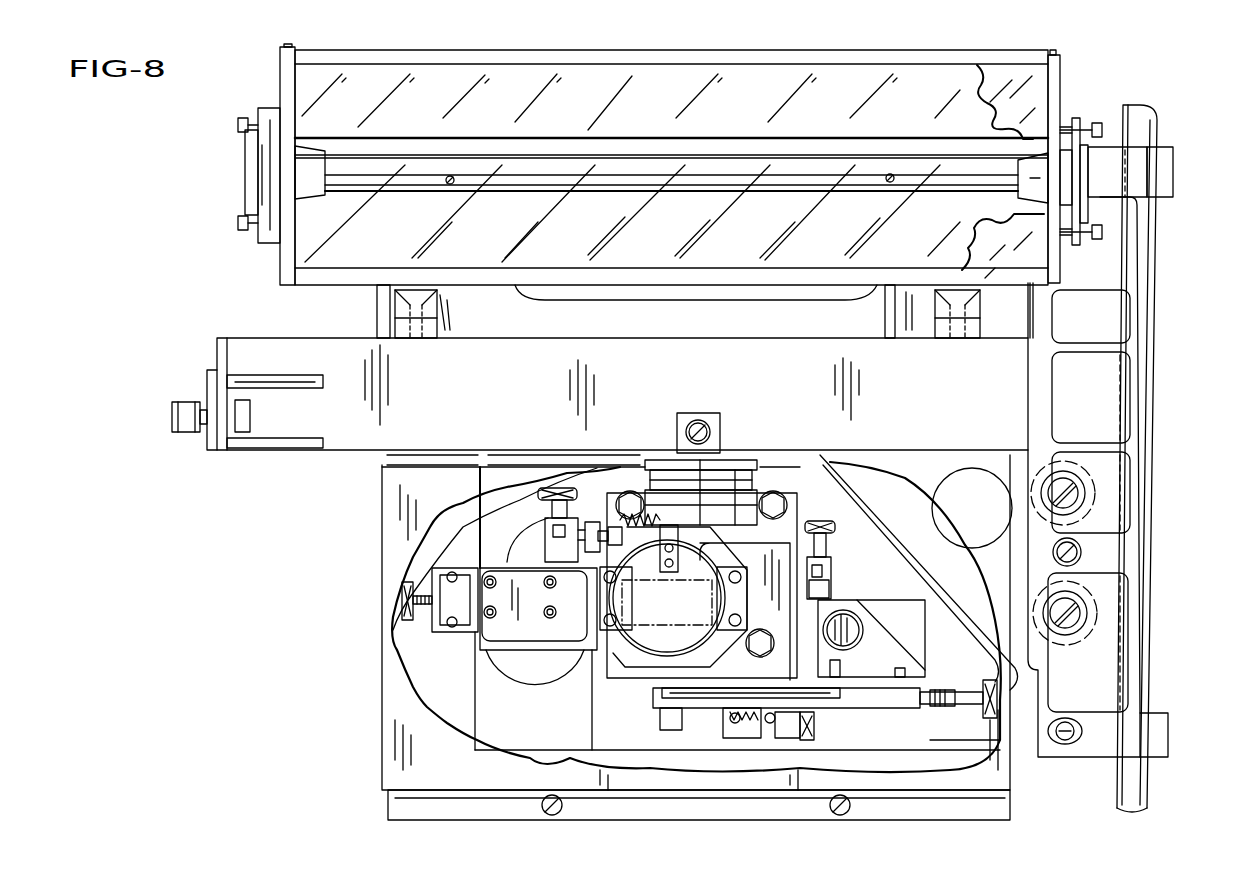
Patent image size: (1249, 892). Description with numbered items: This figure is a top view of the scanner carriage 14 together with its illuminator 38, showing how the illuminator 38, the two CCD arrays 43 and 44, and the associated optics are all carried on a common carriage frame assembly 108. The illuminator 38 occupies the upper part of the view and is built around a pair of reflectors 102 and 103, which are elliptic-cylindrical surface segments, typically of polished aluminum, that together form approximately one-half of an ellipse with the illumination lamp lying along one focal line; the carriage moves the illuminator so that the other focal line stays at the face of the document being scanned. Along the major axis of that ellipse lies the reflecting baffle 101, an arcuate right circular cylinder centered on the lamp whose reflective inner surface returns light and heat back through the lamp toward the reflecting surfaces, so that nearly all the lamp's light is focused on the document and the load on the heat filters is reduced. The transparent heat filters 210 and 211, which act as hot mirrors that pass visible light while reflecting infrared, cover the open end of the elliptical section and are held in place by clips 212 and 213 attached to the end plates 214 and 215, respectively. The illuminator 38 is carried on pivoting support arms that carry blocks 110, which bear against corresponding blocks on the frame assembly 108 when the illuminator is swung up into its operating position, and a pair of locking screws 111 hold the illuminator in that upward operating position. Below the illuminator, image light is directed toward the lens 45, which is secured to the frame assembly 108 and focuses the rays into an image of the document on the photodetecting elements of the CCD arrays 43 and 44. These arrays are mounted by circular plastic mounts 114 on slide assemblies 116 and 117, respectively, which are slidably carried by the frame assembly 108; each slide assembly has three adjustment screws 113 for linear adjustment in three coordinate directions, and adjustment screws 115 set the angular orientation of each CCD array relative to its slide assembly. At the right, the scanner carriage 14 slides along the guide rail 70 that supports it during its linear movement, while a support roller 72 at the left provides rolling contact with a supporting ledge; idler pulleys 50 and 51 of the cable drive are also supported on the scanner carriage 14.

The scanner carriage 14 is at (296, 660).
The illuminator 38 is at (282, 262).
The CCD array 43 is at (640, 652).
The CCD array 44 is at (662, 708).
The lens 45 is at (733, 480).
The idler pulley 50 is at (1035, 605).
The idler pulley 51 is at (1085, 465).
The guide rail 70 is at (1140, 130).
The support roller 72 is at (172, 418).
The reflecting baffle 101 is at (430, 175).
The reflector 102 is at (1030, 100).
The reflector 103 is at (1050, 255).
The carriage frame assembly 108 is at (280, 450).
The block 110 is at (455, 330).
The spring 111 is at (440, 302).
The adjustment screw 113 is at (560, 490).
The circular plastic mount 114 is at (592, 655).
The adjustment screw 115 is at (610, 455).
The slide assembly 116 is at (455, 640).
The slide assembly 117 is at (918, 738).
The heat filter 210 is at (315, 80).
The heat filter 211 is at (340, 262).
The clip 212 is at (292, 90).
The clip 213 is at (1064, 108).
The end plate 214 is at (290, 103).
The end plate 215 is at (1063, 68).